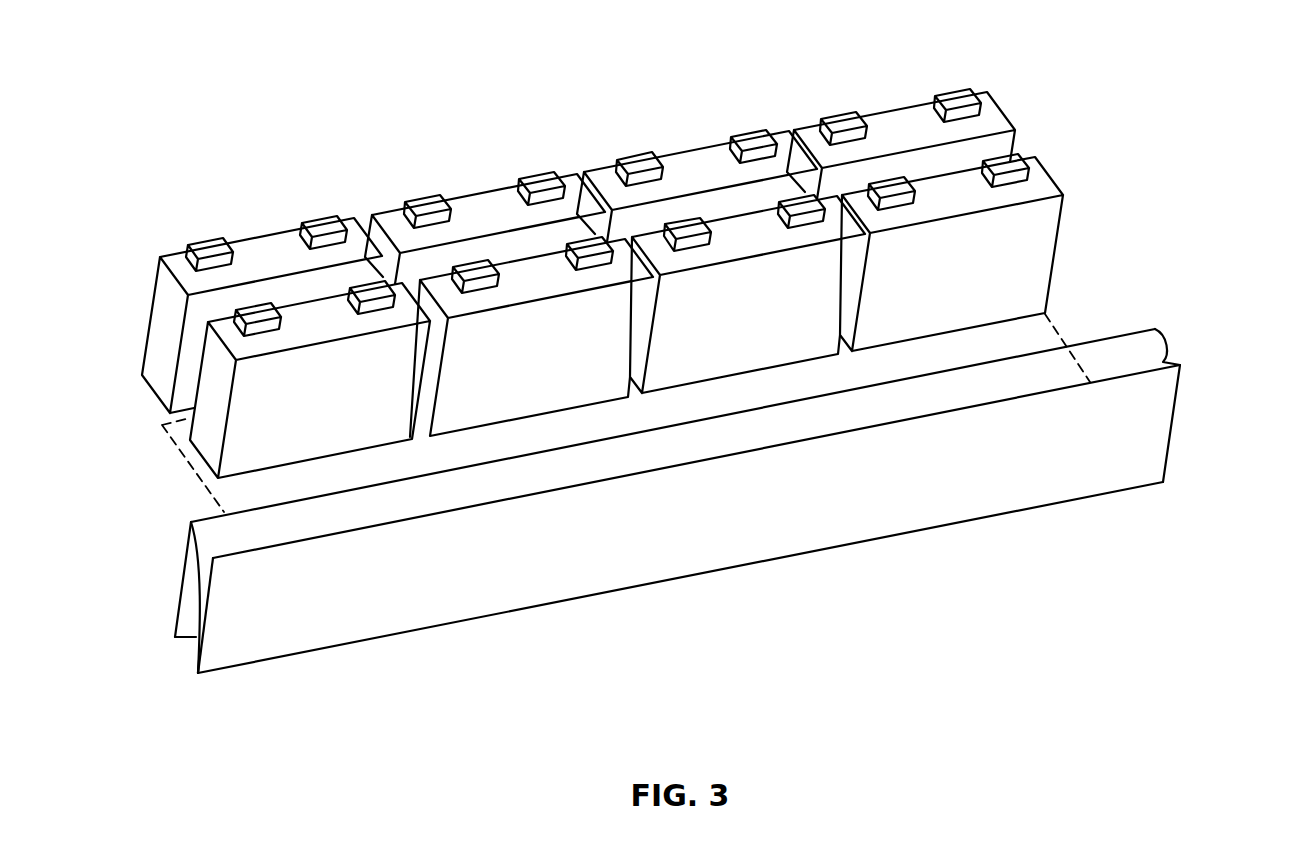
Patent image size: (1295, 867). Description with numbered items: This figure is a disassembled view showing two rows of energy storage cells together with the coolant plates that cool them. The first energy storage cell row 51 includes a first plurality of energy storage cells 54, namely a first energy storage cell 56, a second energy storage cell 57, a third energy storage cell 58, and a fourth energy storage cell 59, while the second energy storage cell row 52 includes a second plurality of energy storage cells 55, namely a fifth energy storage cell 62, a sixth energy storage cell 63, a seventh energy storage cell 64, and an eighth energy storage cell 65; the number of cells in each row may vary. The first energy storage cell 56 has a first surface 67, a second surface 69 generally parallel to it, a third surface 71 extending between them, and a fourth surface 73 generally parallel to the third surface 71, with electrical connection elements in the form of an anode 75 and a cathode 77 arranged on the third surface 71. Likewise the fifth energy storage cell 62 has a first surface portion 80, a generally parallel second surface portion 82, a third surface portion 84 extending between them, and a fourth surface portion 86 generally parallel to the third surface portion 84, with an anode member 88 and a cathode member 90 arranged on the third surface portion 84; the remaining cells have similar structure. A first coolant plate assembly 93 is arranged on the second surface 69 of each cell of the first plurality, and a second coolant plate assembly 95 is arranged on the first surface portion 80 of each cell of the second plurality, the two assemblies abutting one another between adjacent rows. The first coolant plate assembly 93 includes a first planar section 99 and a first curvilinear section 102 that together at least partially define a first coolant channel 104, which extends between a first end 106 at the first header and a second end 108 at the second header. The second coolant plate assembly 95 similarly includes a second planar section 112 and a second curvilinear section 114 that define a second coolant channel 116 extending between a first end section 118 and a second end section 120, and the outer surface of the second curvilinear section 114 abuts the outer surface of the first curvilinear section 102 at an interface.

The first energy storage cell row 51 is at (607, 356).
The second energy storage cell row 52 is at (589, 233).
The first plurality of energy storage cells 54 is at (207, 440).
The second plurality of energy storage cells 55 is at (160, 372).
The first energy storage cell 56 is at (281, 356).
The second energy storage cell 57 is at (519, 372).
The third energy storage cell 58 is at (725, 330).
The fourth energy storage cell 59 is at (934, 287).
The fifth energy storage cell 62 is at (225, 282).
The sixth energy storage cell 63 is at (473, 212).
The seventh energy storage cell 64 is at (683, 172).
The eighth energy storage cell 65 is at (907, 125).
The first surface 67 is at (288, 458).
The second surface 69 is at (200, 363).
The third surface 71 is at (308, 313).
The fourth surface 73 is at (352, 453).
The anode 75 is at (262, 332).
The cathode 77 is at (370, 310).
The first surface portion 80 is at (302, 290).
The second surface portion 82 is at (175, 265).
The third surface portion 84 is at (160, 275).
The fourth surface portion 86 is at (167, 413).
The anode member 88 is at (213, 247).
The cathode member 90 is at (323, 228).
The first coolant plate assembly 93 is at (1179, 387).
The second coolant plate assembly 95 is at (1166, 348).
The first planar section 99 is at (671, 493).
The first curvilinear section 102 is at (190, 666).
The first coolant channel 104 is at (204, 627).
The first end 106 is at (212, 662).
The second end 108 is at (1172, 440).
The second planar section 112 is at (222, 512).
The second curvilinear section 114 is at (772, 442).
The second coolant channel 116 is at (189, 586).
The first end section 118 is at (188, 533).
The second end section 120 is at (1167, 338).